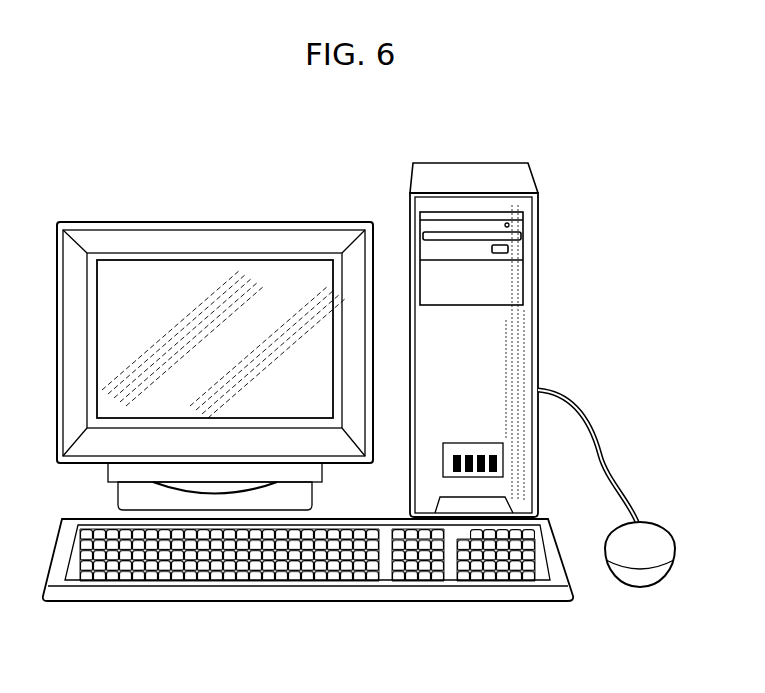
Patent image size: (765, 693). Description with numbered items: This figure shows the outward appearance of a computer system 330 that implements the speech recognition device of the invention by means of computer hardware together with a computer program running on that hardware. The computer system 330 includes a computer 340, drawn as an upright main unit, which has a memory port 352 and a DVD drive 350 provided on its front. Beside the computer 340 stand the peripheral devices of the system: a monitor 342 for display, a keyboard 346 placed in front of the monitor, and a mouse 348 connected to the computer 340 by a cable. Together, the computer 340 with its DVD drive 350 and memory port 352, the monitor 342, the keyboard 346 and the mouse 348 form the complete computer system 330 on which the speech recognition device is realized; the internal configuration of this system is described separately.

The computer system 330 is at (596, 142).
The computer 340 is at (528, 164).
The monitor 342 is at (352, 222).
The keyboard 346 is at (563, 538).
The mouse 348 is at (672, 508).
The DVD drive 350 is at (520, 233).
The memory port 352 is at (505, 454).